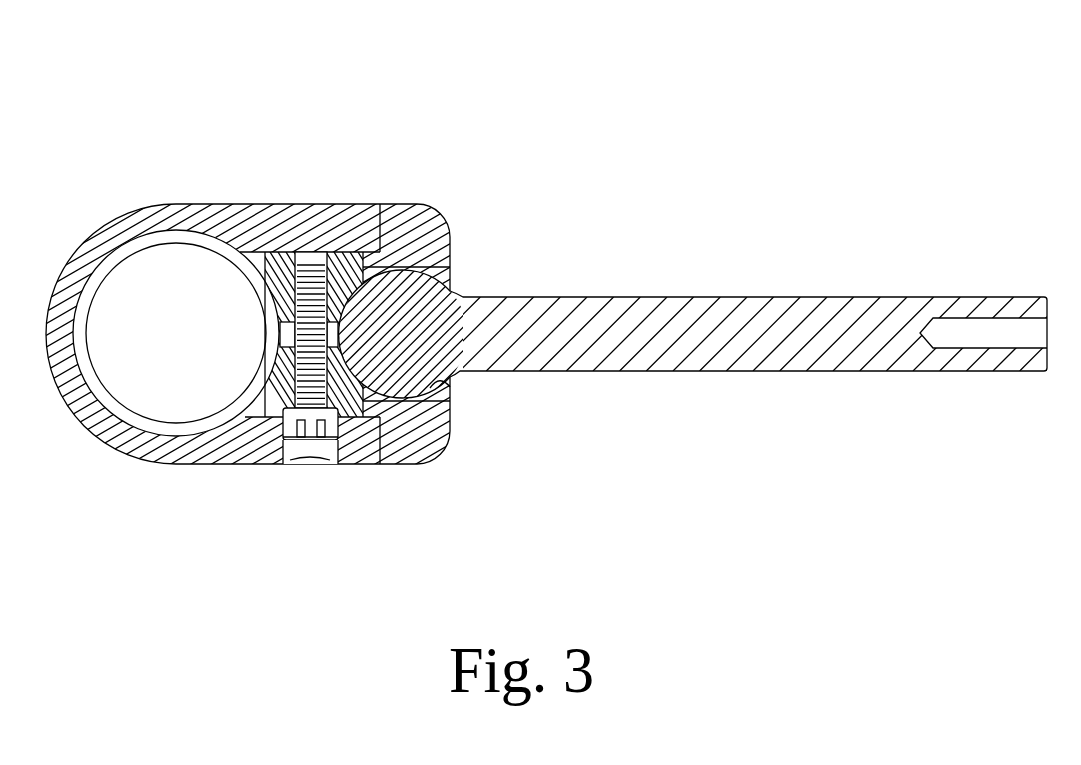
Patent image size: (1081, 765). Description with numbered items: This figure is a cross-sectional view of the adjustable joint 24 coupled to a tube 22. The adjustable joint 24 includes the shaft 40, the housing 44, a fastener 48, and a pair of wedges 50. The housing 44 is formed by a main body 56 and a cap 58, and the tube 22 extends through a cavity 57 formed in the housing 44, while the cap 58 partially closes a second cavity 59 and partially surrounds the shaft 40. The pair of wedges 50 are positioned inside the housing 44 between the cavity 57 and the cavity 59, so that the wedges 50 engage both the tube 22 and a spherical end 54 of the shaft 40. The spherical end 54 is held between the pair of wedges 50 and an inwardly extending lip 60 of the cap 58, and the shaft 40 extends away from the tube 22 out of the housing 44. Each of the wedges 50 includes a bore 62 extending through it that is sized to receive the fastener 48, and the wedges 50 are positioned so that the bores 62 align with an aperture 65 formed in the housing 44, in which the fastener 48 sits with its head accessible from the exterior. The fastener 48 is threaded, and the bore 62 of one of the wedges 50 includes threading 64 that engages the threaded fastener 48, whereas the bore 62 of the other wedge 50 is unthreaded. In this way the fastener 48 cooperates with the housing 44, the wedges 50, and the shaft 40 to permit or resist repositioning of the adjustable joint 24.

The tube 22 is at (120, 240).
The adjustable joint 24 is at (430, 116).
The shaft 40 is at (975, 312).
The housing 44 is at (289, 134).
The fastener 48 is at (293, 422).
The pair of wedges 50 is at (340, 250).
The spherical end 54 is at (407, 285).
The main body 56 is at (238, 205).
The cavity 57 is at (183, 405).
The cap 58 is at (445, 430).
The cavity 59 is at (385, 447).
The inwardly extending lip 60 is at (453, 380).
The bore 62 is at (300, 255).
The threading 64 is at (292, 302).
The aperture 65 is at (310, 450).